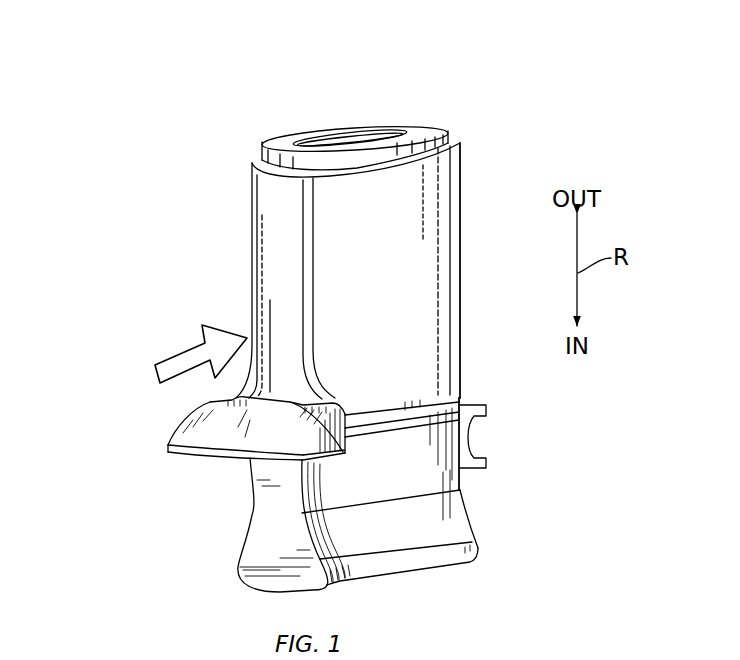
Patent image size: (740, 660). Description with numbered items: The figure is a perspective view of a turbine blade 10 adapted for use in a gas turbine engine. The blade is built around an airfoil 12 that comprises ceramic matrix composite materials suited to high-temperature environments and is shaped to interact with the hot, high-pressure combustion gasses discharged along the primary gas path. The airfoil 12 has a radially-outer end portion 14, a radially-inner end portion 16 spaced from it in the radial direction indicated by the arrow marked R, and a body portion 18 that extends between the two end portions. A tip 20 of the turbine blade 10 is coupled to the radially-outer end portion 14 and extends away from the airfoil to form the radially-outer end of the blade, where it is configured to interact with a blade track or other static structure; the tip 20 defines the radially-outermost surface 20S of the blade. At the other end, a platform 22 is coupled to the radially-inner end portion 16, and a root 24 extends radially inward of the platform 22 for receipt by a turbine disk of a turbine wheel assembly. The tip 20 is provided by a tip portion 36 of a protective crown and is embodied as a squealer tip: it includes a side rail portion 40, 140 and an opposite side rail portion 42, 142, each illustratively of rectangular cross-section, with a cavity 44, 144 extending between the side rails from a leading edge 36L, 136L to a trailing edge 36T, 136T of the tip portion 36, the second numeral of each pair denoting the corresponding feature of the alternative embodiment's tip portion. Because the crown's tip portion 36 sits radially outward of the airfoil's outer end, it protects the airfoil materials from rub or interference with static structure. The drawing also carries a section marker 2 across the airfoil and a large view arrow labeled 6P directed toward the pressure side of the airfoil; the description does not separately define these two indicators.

The turbine blade 10 is at (130, 92).
The airfoil 12 is at (407, 318).
The radially-outer end portion 14 is at (427, 170).
The radially-inner end portion 16 is at (432, 393).
The body portion 18 is at (368, 265).
The tip 20 is at (402, 120).
The radially-outermost surface 20S is at (279, 142).
The platform 22 is at (197, 447).
The root 24 is at (278, 541).
The tip portion 36 is at (460, 143).
The trailing edge 36T is at (458, 150).
The trailing edge 136T is at (534, 142).
The leading edge 36L is at (259, 157).
The leading edge 136L is at (182, 159).
The side rail portion 40 is at (322, 130).
The side rail portion 140 is at (393, 139).
The side rail portion 42 is at (322, 160).
The side rail portion 142 is at (350, 183).
The cavity 44 is at (345, 134).
The cavity 144 is at (396, 99).
The section line 2- 2 is at (247, 278).
The pressure side viewing direction 6P is at (162, 382).